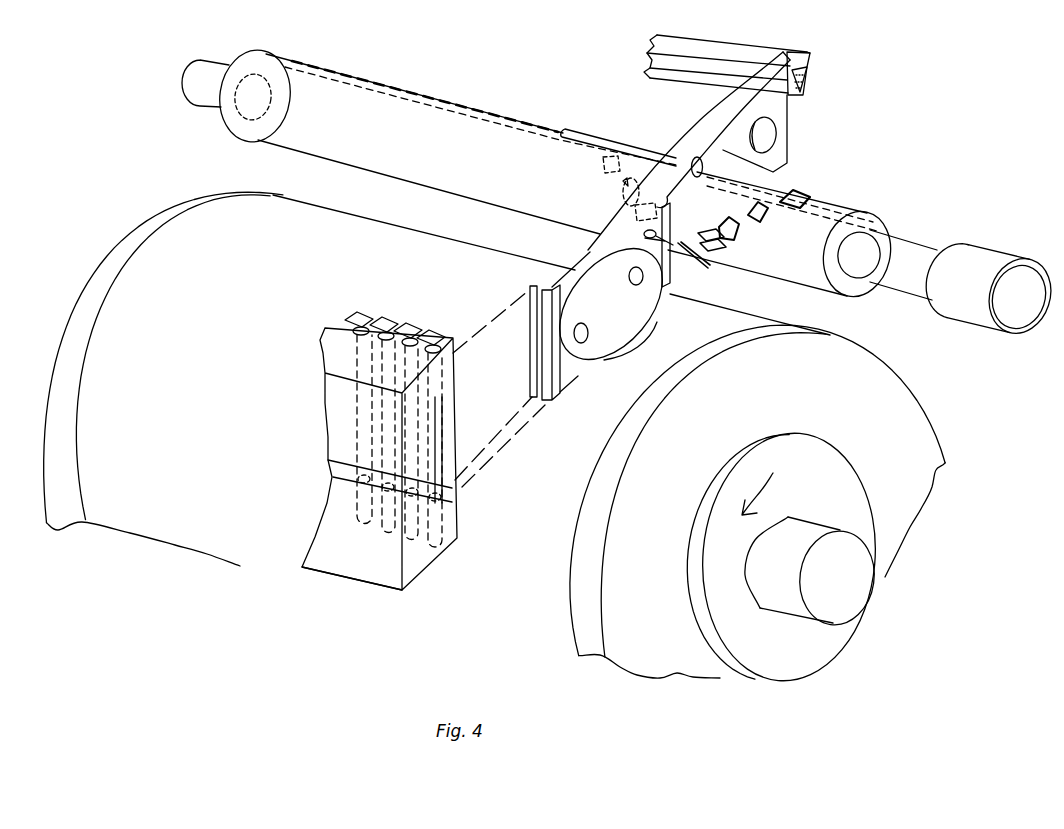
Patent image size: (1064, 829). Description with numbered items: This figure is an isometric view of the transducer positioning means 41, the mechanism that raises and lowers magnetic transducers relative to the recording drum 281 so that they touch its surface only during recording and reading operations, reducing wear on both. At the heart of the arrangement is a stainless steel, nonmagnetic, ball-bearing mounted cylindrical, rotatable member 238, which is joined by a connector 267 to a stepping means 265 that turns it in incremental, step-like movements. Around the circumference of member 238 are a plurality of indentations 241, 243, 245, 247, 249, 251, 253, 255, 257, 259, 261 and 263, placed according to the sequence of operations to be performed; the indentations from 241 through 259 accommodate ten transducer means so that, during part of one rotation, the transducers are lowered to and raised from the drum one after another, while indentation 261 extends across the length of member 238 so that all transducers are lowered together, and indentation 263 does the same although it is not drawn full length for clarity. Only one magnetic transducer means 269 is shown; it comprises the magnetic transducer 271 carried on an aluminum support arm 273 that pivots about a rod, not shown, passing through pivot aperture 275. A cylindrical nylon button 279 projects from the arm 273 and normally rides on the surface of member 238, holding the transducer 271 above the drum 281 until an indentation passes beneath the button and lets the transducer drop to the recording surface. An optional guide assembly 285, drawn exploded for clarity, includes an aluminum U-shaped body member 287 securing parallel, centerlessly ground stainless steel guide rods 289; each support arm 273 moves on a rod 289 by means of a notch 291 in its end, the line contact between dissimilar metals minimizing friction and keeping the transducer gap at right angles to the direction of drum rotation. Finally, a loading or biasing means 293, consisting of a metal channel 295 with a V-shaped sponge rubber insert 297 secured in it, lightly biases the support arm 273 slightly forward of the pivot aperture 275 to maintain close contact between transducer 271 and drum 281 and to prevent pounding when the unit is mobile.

The transducer positioning means 41 is at (349, 204).
The cylindrical, rotatable member 238 is at (802, 277).
The indentation 241 is at (800, 196).
The indentation 243 is at (768, 214).
The indentation 245 is at (739, 229).
The indentation 247 is at (722, 245).
The indentation 249 is at (706, 270).
The indentation 251 is at (666, 248).
The indentation 253 is at (668, 212).
The indentation 255 is at (658, 208).
The indentation 257 is at (623, 181).
The indentation 259 is at (601, 172).
The indentation 261 is at (588, 139).
The indentation 263 is at (317, 70).
The stepping means 265 is at (1003, 251).
The connector 267 is at (915, 243).
The magnetic transducer means 269 is at (576, 260).
The magnetic transducer 271 is at (643, 313).
The support arm 273 is at (701, 121).
The pivot aperture 275 is at (775, 137).
The button 279 is at (706, 164).
The recording drum 281 is at (757, 506).
The guide assembly 285 is at (362, 566).
The body member 287 is at (363, 577).
The guide rods 289 is at (403, 324).
The notch 291 is at (531, 285).
The loading or biasing means 293 is at (725, 64).
The metal channel 295 is at (808, 53).
The V-shaped sponge rubber insert 297 is at (812, 77).